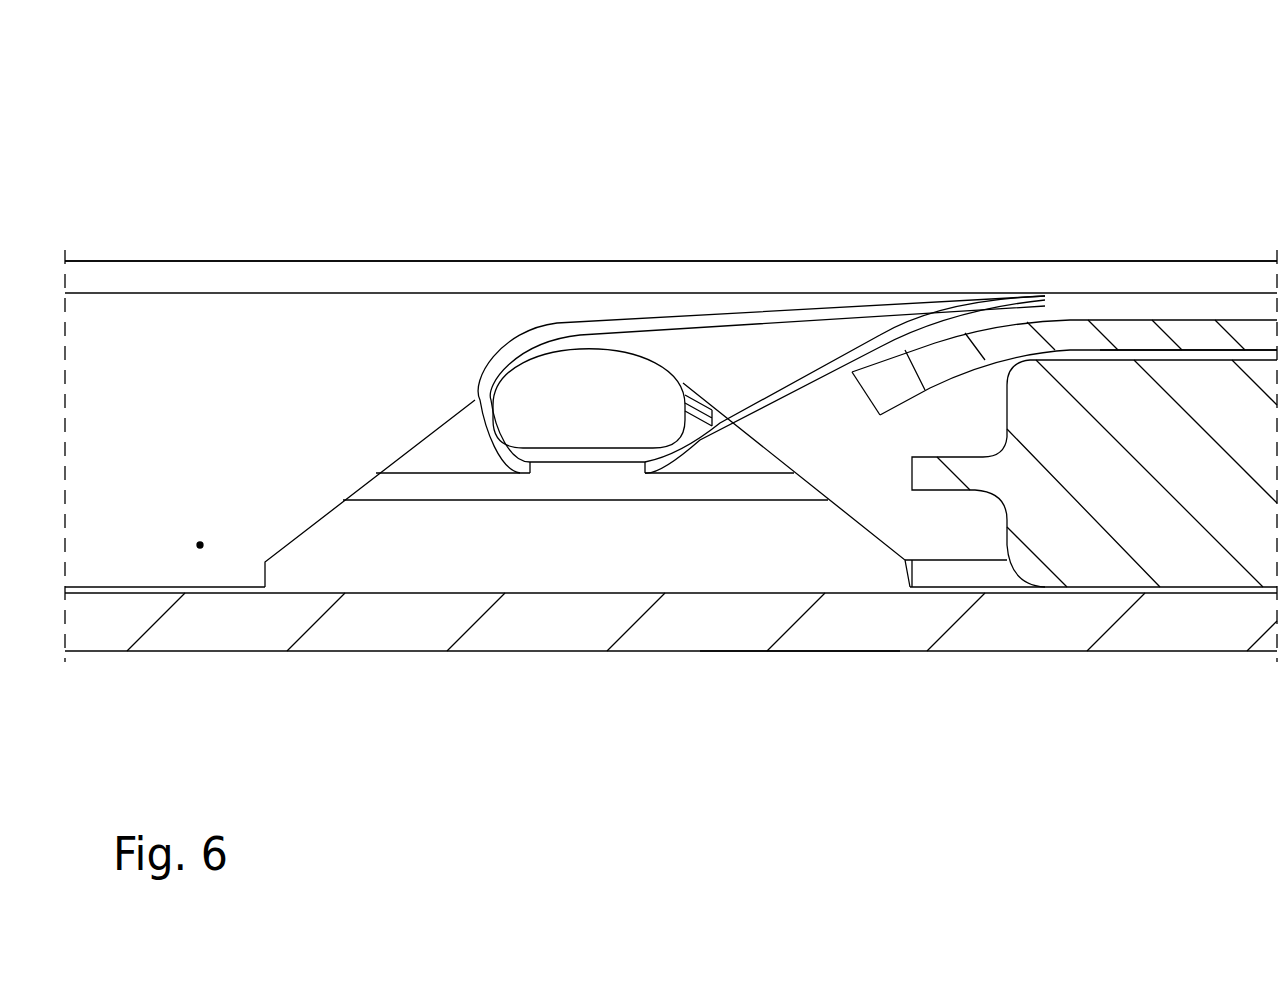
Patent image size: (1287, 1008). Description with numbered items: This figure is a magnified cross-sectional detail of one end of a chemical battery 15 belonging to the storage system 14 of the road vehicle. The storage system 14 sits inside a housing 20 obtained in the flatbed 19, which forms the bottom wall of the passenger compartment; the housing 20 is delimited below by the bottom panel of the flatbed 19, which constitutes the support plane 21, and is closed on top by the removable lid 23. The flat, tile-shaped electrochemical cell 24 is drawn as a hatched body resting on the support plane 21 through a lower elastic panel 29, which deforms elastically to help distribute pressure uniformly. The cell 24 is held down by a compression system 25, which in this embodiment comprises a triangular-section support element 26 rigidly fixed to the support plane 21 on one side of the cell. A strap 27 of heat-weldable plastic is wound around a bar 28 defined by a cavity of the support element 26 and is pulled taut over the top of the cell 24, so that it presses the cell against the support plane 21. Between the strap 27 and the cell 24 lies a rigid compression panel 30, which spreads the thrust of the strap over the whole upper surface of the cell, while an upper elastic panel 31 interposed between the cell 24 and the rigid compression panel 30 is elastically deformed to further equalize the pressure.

The storage system 14 is at (781, 818).
The chemical battery 15 is at (1145, 152).
The flatbed 19 is at (651, 152).
The housing 20 is at (200, 548).
The support plane 21 is at (526, 628).
The lid 23 is at (320, 272).
The electrochemical cell 24 is at (1168, 535).
The compression system 25 is at (455, 175).
The support element 26 is at (690, 528).
The strap 27 is at (773, 315).
The bar 28 is at (588, 400).
The lower elastic panel 29 is at (1000, 590).
The rigid compression panel 30 is at (1072, 332).
The upper elastic panel 31 is at (1256, 352).